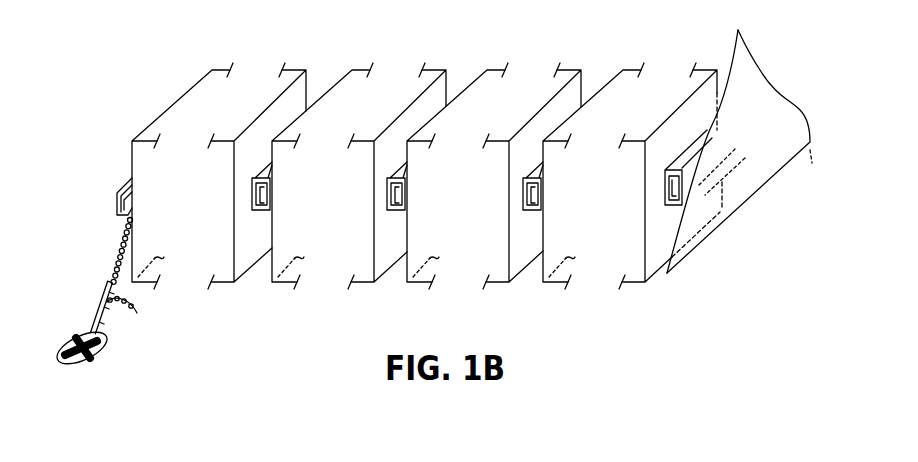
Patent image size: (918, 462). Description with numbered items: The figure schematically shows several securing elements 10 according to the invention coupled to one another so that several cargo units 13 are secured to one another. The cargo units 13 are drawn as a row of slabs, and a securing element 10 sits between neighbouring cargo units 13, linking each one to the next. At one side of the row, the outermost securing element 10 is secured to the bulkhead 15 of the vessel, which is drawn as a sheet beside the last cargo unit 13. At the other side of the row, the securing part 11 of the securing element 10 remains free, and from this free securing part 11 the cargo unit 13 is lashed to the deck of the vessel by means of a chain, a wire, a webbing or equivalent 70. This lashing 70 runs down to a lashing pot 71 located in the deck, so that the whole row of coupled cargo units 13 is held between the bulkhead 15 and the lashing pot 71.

The cargo unit 13 is at (249, 78).
The securing element 10 is at (253, 203).
The securing part 11 is at (117, 197).
The bulkhead 15 is at (750, 187).
The chain, wire, webbing or equivalent 70 is at (140, 333).
The lashing pot 71 is at (95, 360).